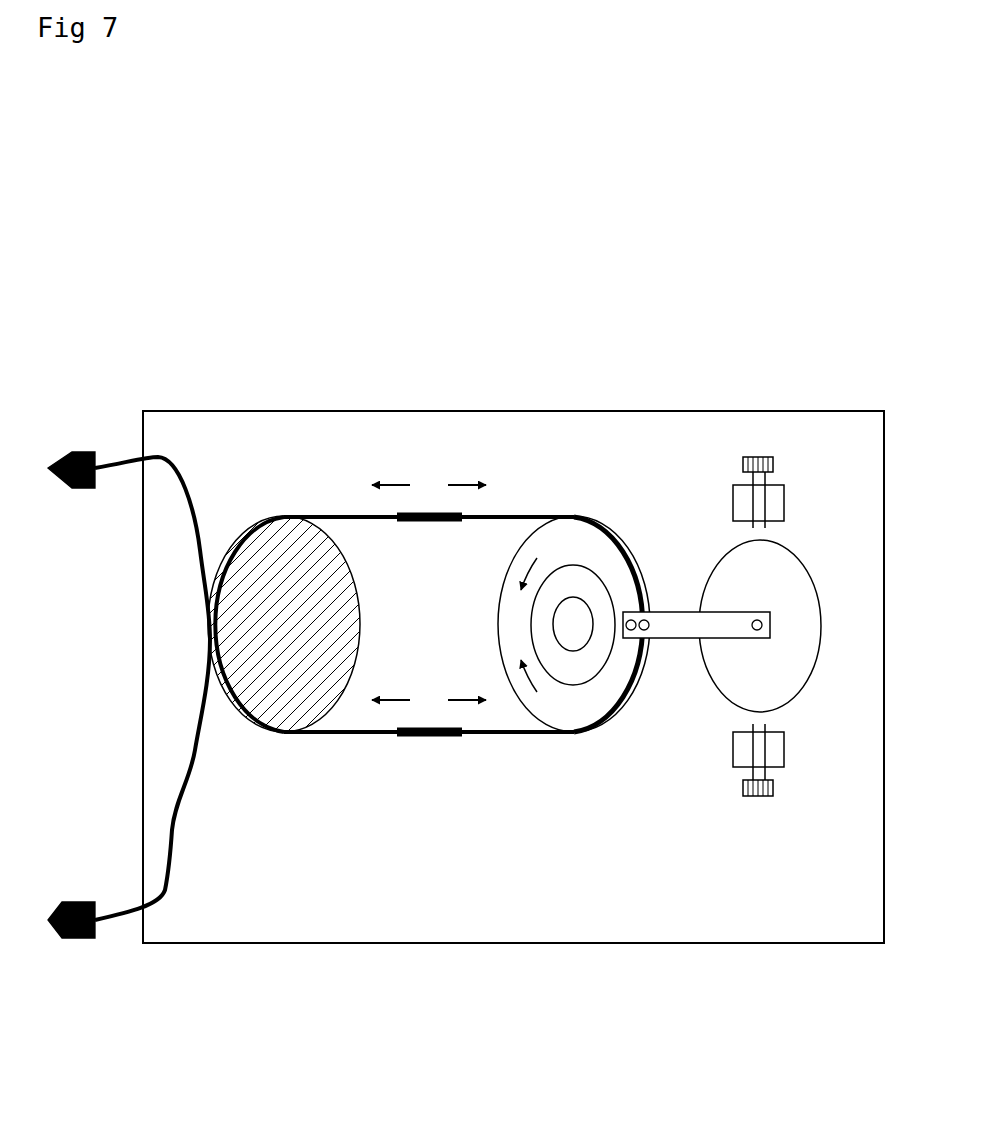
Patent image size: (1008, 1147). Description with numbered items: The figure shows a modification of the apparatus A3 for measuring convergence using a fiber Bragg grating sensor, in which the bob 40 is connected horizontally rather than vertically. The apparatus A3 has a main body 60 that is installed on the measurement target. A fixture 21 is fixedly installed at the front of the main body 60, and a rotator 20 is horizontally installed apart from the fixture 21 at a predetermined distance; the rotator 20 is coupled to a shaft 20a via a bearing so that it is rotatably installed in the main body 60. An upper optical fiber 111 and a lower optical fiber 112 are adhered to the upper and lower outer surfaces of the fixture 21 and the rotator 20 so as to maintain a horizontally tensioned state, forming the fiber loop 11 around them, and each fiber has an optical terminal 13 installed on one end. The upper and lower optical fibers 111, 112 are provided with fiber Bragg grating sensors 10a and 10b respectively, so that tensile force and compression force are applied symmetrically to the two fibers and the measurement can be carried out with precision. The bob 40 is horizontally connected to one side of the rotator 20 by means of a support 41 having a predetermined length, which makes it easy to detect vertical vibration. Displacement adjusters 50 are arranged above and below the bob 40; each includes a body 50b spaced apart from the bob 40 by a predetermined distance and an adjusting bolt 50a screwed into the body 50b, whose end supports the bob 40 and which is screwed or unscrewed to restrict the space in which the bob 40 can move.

The apparatus A3 is at (762, 270).
The optical terminal 13 is at (80, 452).
The belt 11 is at (394, 590).
The upper optical fiber 111 is at (520, 513).
The lower optical fiber 112 is at (514, 740).
The fiber Bragg grating sensor 10a is at (437, 522).
The fiber Bragg grating sensor 10b is at (437, 740).
The fixture 21 is at (350, 655).
The rotator 20 is at (630, 584).
The shaft 20a is at (578, 632).
The bob 40 is at (790, 666).
The support 41 is at (678, 627).
The displacement adjuster 50 is at (790, 692).
The adjusting bolt 50a is at (750, 798).
The body 50b is at (783, 752).
The main body 60 is at (490, 912).